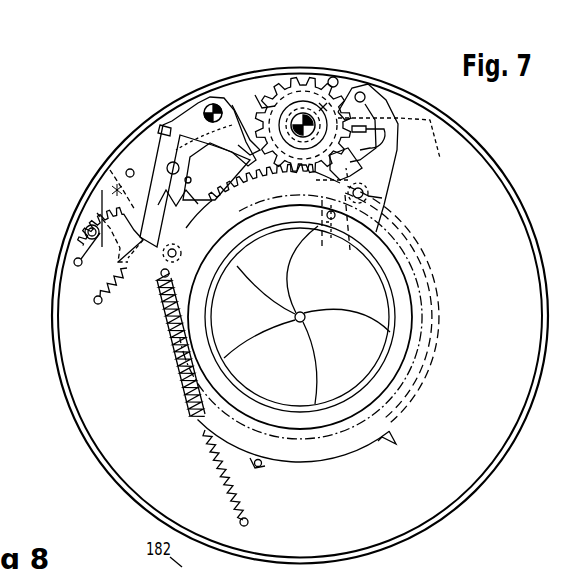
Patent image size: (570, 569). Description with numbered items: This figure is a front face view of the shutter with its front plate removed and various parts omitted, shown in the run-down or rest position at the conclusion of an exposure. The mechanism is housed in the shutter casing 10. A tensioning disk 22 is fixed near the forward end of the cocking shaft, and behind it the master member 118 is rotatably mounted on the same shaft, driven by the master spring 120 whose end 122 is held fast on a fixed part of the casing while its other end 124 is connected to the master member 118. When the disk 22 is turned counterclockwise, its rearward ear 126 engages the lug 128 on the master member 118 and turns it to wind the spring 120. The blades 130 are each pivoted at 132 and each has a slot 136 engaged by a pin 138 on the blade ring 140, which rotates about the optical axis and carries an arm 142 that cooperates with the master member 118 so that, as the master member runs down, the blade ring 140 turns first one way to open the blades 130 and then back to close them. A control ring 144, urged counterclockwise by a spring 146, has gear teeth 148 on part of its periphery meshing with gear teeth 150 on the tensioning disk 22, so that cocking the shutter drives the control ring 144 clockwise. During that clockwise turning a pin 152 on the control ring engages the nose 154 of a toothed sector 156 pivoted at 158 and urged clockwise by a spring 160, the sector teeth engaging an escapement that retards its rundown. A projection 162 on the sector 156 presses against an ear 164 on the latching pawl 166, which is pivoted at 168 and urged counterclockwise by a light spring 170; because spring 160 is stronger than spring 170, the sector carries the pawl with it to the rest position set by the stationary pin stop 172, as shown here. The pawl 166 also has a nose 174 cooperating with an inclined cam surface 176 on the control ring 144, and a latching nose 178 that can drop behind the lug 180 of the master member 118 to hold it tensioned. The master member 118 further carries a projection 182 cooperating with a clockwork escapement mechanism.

The shutter casing 10 is at (408, 542).
The tensioning disk 22 is at (346, 100).
The master member 118 is at (288, 78).
The master spring 120 is at (270, 100).
The spring end 122 is at (332, 156).
The spring end 124 is at (323, 100).
The ear 126 is at (370, 152).
The lug 128 is at (364, 112).
The blades 130 is at (300, 317).
The pivot 132 is at (331, 240).
The slot 136 is at (348, 250).
The pin 138 is at (384, 198).
The blade ring 140 is at (413, 241).
The arm 142 is at (388, 132).
The control ring 144 is at (436, 346).
The spring 146 is at (206, 452).
The gear teeth 148 is at (236, 192).
The gear teeth 150 is at (259, 100).
The pin 152 is at (178, 258).
The nose 154 is at (213, 198).
The toothed sector 156 is at (98, 213).
The pivot 158 is at (180, 150).
The spring 160 is at (188, 199).
The projection 162 is at (101, 188).
The ear 164 is at (116, 186).
The latching pawl 166 is at (182, 126).
The pivot 168 is at (215, 104).
The spring 170 is at (143, 240).
The pin stop 172 is at (130, 169).
The nose 174 is at (93, 251).
The cam surface 176 is at (157, 284).
The latching nose 178 is at (247, 145).
The lug 180 is at (336, 78).
The projection 182 is at (372, 143).